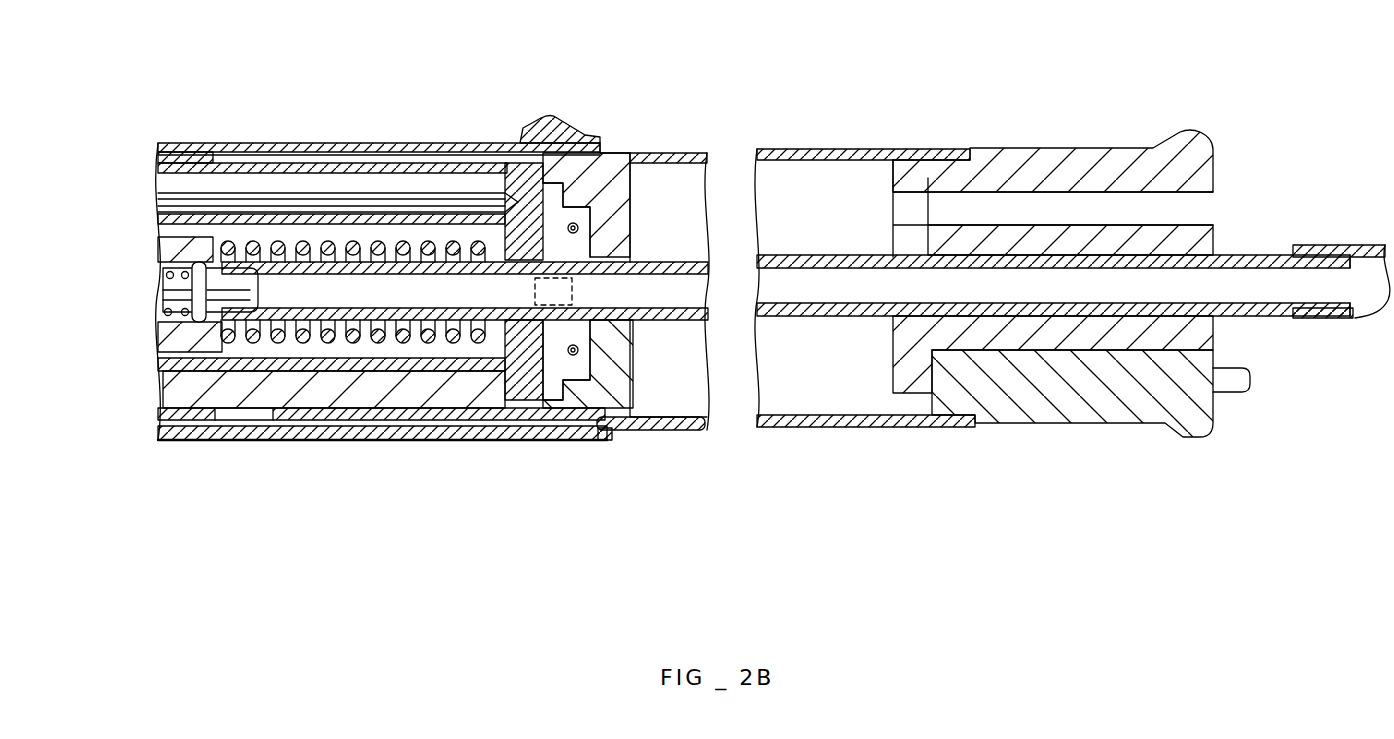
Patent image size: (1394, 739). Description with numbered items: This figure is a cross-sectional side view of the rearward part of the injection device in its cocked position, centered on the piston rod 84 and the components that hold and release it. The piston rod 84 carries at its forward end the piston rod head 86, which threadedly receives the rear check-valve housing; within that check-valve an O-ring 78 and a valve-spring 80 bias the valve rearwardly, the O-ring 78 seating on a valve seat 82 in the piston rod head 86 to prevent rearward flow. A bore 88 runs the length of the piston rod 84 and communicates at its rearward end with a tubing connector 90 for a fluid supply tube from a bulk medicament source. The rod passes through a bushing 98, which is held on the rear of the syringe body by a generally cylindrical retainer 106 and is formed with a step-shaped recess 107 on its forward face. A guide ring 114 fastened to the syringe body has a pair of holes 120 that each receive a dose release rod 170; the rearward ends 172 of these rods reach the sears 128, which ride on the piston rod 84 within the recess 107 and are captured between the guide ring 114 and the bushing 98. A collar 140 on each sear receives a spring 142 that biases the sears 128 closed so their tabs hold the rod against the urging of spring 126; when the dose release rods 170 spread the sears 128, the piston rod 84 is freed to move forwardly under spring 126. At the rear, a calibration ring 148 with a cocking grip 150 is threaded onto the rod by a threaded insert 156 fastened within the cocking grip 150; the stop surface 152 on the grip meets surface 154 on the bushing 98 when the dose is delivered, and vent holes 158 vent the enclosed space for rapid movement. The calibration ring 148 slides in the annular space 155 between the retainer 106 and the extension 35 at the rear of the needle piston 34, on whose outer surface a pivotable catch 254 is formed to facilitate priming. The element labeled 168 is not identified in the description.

The needle piston 34 is at (372, 143).
The extension 35 is at (475, 441).
The O-ring 78 is at (200, 294).
The valve-spring 80 is at (175, 320).
The valve seat 82 is at (215, 272).
The piston rod 84 is at (641, 320).
The piston rod head 86 is at (188, 268).
The bore 88 is at (822, 290).
The tubing connector 90 is at (1317, 318).
The bushing 98 is at (613, 372).
The retainer 106 is at (355, 409).
The step-shaped recess 107 is at (578, 356).
The guide ring 114 is at (524, 400).
The holes 120 is at (603, 150).
The spring 126 is at (272, 332).
The sears 128 is at (612, 178).
The collar 140 is at (575, 250).
The spring 142 is at (555, 205).
The calibration ring 148 is at (851, 427).
The cocking grip 150 is at (1063, 163).
The stop surface 152 is at (893, 338).
The surface 154 is at (630, 362).
The annular space 155 is at (413, 427).
The threaded insert 156 is at (1200, 242).
The vent holes 158 is at (1200, 210).
The end block 168 is at (182, 265).
The dose release rod 170 is at (443, 195).
The rearward ends 172 is at (512, 190).
The catch 254 is at (552, 137).